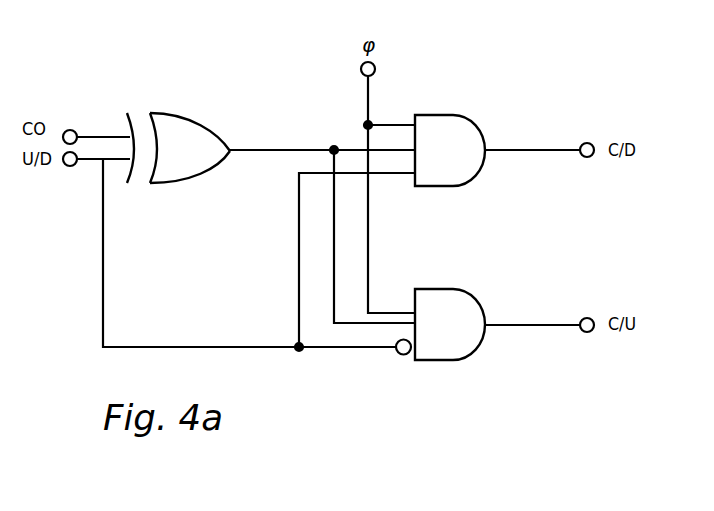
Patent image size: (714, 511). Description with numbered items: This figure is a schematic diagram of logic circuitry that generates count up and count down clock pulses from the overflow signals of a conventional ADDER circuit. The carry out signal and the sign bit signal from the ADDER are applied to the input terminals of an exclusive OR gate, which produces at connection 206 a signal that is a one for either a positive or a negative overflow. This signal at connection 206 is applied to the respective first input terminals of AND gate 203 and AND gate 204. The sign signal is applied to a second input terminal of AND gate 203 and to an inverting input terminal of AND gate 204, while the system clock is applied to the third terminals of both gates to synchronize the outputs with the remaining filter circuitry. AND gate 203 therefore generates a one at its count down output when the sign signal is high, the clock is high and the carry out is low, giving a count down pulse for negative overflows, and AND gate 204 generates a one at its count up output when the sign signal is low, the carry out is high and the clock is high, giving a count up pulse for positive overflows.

The AND gate 203 is at (450, 150).
The AND gate 204 is at (440, 324).
The connection 206 is at (253, 145).